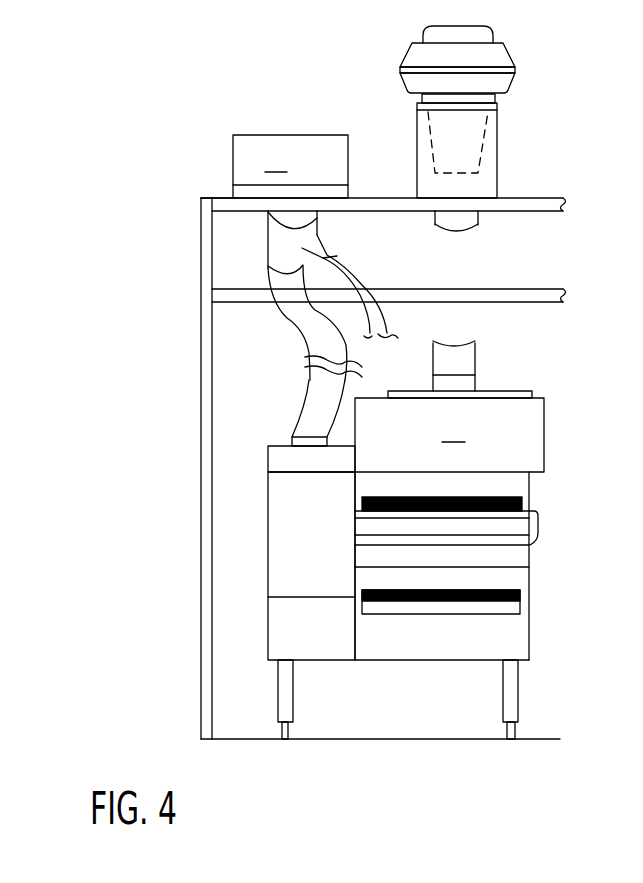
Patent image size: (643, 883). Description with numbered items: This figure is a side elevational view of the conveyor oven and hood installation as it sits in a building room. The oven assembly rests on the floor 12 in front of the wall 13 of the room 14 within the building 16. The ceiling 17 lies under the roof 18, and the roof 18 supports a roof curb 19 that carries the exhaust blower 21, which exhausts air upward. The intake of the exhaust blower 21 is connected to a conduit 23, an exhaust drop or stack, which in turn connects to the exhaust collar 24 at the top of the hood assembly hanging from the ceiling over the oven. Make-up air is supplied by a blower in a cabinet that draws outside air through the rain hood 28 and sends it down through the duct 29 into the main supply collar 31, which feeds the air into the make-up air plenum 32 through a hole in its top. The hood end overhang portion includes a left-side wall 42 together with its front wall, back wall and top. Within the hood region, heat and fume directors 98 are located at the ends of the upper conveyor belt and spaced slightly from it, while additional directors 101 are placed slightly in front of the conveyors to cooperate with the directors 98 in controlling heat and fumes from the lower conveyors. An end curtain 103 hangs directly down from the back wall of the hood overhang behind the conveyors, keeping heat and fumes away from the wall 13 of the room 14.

The floor 12 is at (422, 706).
The wall 13 is at (160, 468).
The room 14 is at (181, 393).
The building 16 is at (158, 158).
The ceiling 17 is at (340, 264).
The roof 18 is at (421, 175).
The roof curb 19 is at (397, 132).
The exhaust blower 21 is at (414, 58).
The conduit 23 is at (508, 301).
The exhaust collar 24 is at (507, 438).
The rain hood 28 is at (290, 166).
The duct 29 is at (231, 333).
The main supply collar 31 is at (246, 479).
The make-up air plenum 32 is at (242, 559).
The left-side wall 42 is at (449, 435).
The heat and fume director 98 is at (482, 576).
The director 101 is at (538, 528).
The end curtain 103 is at (277, 605).